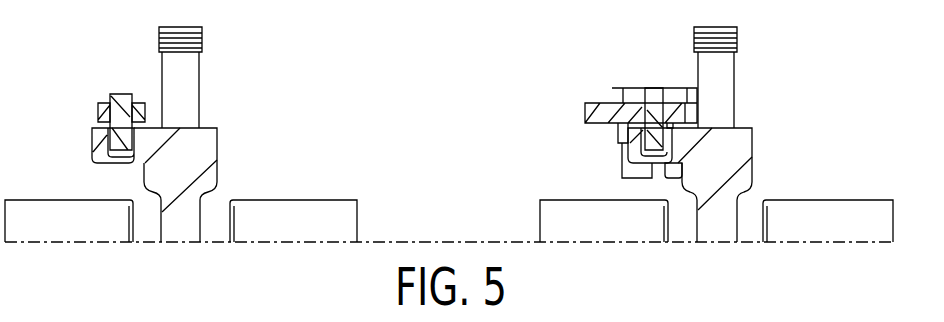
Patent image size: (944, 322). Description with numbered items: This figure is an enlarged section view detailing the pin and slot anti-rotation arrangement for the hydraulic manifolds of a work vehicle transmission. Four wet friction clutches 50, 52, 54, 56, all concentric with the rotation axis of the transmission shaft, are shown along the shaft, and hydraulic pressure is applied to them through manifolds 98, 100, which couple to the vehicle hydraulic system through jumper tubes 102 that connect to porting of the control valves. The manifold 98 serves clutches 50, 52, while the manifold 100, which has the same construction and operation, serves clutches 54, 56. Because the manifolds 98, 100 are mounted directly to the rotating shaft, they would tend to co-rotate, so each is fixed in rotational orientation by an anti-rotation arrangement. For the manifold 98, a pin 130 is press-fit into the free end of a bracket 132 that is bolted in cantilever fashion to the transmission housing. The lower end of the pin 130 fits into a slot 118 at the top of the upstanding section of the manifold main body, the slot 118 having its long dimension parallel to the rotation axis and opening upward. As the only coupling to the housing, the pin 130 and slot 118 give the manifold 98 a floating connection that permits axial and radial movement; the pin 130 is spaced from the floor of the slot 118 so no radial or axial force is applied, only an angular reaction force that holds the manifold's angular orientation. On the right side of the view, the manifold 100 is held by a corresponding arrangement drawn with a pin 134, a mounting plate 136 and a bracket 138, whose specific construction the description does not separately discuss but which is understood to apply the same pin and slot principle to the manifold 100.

The friction clutch 50 is at (43, 222).
The friction clutch 52 is at (288, 222).
The friction clutch 54 is at (590, 246).
The friction clutch 56 is at (812, 246).
The manifold 98 is at (209, 153).
The manifold 100 is at (731, 151).
The jumper tube 102 is at (189, 82).
The slot 118 is at (115, 157).
The pin 130 is at (122, 95).
The bracket 132 is at (97, 108).
The fastener 134 is at (655, 108).
The clamp plate 136 is at (601, 124).
The bracket 138 is at (650, 165).